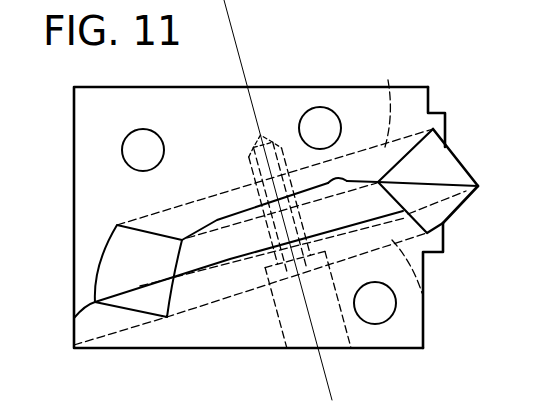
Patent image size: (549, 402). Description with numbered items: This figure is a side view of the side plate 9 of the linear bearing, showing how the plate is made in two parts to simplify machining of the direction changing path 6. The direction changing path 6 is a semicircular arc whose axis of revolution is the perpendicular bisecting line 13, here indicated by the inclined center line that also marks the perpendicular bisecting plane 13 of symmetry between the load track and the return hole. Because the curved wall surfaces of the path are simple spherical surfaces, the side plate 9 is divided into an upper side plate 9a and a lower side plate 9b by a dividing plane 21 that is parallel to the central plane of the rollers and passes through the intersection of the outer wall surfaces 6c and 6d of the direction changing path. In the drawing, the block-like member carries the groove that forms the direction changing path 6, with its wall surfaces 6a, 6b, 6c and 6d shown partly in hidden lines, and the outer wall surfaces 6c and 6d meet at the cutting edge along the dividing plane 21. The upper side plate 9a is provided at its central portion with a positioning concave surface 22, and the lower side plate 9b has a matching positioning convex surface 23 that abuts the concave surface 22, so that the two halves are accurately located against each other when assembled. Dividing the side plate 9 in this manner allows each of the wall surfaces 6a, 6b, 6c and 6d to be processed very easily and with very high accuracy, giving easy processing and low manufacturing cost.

The side plate 9 is at (428, 277).
The upper side plate 9a is at (408, 98).
The lower side plate 9b is at (393, 333).
The direction changing path 6 is at (425, 174).
The wall surface of the direction changing path 6a is at (392, 101).
The wall surface of the direction changing path 6b is at (422, 293).
The outer wall surface of the direction changing path 6c is at (457, 173).
The outer wall surface of the direction changing path 6d is at (444, 224).
The dividing plane 21 is at (468, 190).
The positioning concave surface 22 is at (328, 183).
The positioning convex surface 23 is at (363, 180).
The perpendicular bisecting plane 13 is at (234, 33).